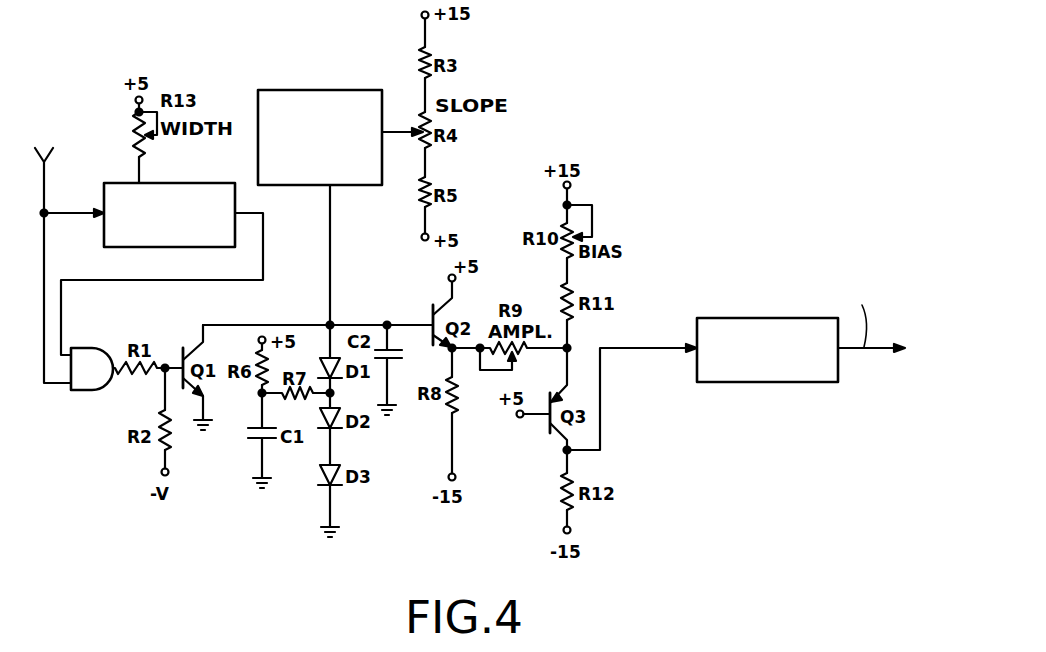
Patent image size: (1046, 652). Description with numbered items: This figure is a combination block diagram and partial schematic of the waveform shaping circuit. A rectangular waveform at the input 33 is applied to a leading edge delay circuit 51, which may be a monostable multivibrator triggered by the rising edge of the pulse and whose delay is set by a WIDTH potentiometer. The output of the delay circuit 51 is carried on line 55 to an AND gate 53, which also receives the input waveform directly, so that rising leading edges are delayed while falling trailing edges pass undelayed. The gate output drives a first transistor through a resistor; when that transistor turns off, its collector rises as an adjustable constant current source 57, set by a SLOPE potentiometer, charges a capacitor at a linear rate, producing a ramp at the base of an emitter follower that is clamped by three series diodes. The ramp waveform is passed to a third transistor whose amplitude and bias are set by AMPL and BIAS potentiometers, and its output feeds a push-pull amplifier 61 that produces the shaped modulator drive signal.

The input 33 is at (48, 182).
The leading edge delay circuit 51 is at (175, 183).
The AND gate 53 is at (83, 347).
The line 55 is at (178, 282).
The current source 57 is at (343, 186).
The push-pull amplifier 61 is at (752, 383).